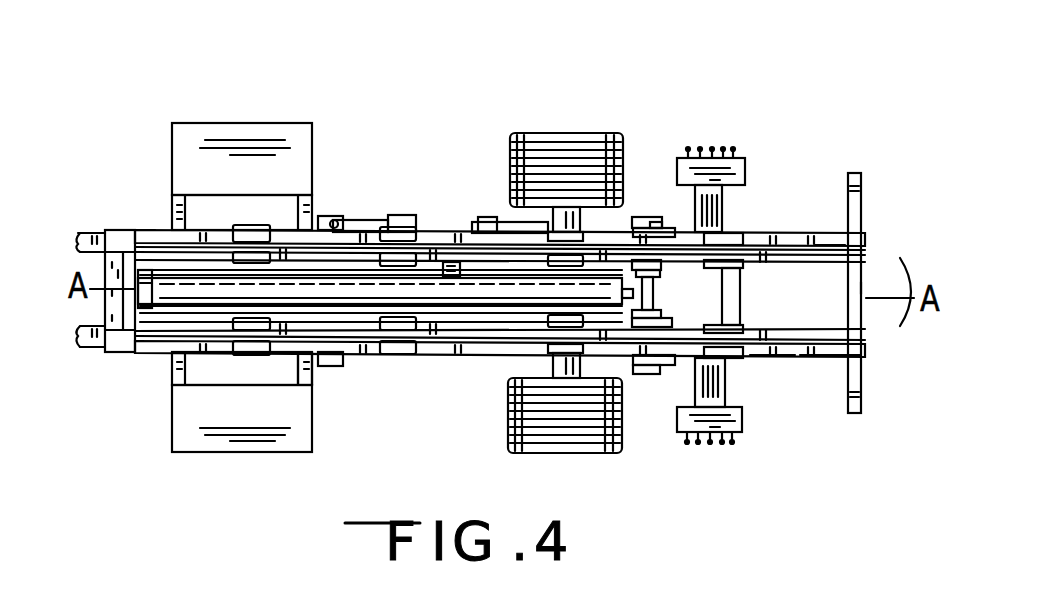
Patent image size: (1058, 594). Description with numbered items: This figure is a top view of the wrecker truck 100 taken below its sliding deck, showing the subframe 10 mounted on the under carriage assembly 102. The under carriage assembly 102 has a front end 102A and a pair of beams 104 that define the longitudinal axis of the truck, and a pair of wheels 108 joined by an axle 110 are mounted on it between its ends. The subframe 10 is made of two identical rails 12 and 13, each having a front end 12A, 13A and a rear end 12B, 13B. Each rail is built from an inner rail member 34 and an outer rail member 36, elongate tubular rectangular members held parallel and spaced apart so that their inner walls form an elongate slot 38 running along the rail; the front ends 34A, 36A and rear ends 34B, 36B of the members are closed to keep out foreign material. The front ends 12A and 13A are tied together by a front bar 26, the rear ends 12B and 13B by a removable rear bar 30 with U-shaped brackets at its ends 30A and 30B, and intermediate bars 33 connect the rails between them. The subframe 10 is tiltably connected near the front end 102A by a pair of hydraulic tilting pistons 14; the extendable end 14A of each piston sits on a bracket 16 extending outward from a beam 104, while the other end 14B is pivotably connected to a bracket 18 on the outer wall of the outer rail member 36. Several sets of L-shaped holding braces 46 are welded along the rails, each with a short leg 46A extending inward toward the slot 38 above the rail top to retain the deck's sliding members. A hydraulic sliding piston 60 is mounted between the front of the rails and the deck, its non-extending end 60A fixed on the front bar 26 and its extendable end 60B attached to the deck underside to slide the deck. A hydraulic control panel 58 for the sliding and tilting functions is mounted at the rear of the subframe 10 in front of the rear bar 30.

The wrecker truck 100 is at (245, 104).
The subframe 10 is at (140, 233).
The rail 12 is at (618, 365).
The front end of rail 12A is at (118, 350).
The rear end of rail 12B is at (780, 355).
The rail 13 is at (438, 233).
The front end of rail 13A is at (110, 237).
The rear end of rail 13B is at (825, 237).
The hydraulic tilting piston 14 is at (358, 220).
The extendable end of tilting piston 14A is at (333, 217).
The other end of tilting piston 14B is at (397, 218).
The bracket 16 is at (320, 377).
The bracket 18 is at (398, 330).
The front bar 26 is at (120, 273).
The rear bar 30 is at (850, 297).
The end of rear bar 30A is at (903, 158).
The end of rear bar 30B is at (864, 345).
The intermediate bar 33 is at (297, 330).
The inner rail member 34 is at (866, 288).
The front end of inner rail member 34A is at (100, 342).
The rear end of inner rail member 34B is at (815, 358).
The outer rail member 36 is at (868, 244).
The front end of outer rail member 36A is at (79, 233).
The rear end of outer rail member 36B is at (840, 358).
The slot 38 is at (612, 245).
The L-shaped holding brace 46 is at (718, 233).
The short leg of holding brace 46A is at (730, 233).
The hydraulic control panel 58 is at (740, 433).
The hydraulic sliding piston 60 is at (415, 303).
The non-extending end of sliding piston 60A is at (150, 283).
The extendable end of sliding piston 60B is at (660, 296).
The under carriage assembly 102 is at (325, 380).
The front end of under carriage assembly 102A is at (117, 350).
The beam 104 is at (76, 236).
The wheel 108 is at (590, 453).
The axle 110 is at (567, 378).